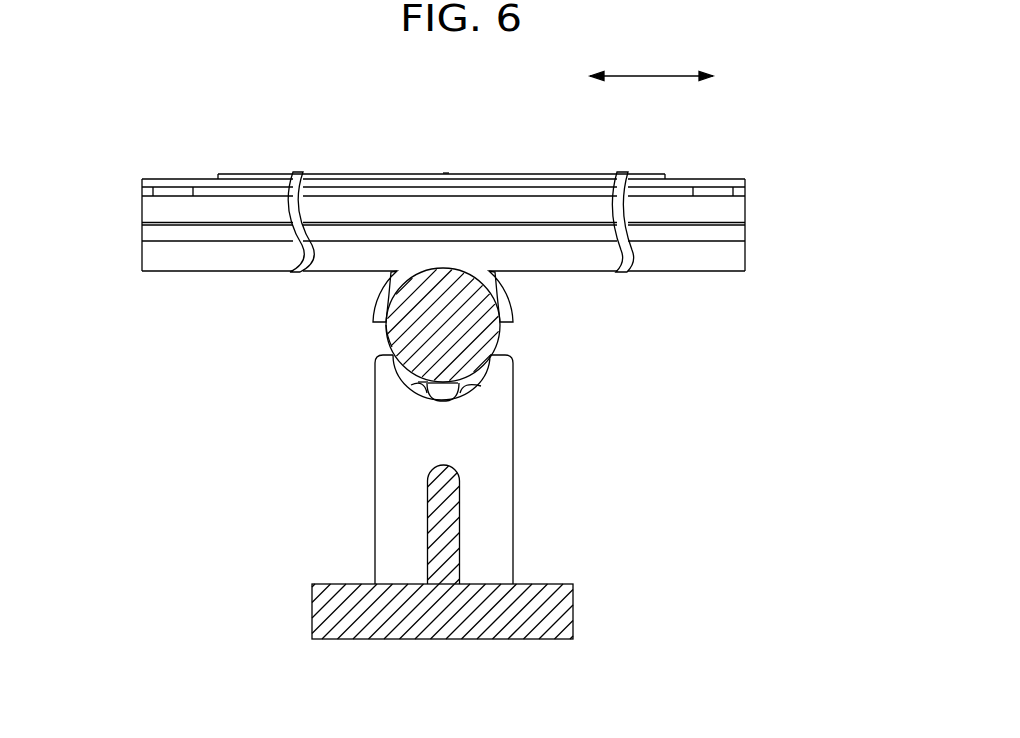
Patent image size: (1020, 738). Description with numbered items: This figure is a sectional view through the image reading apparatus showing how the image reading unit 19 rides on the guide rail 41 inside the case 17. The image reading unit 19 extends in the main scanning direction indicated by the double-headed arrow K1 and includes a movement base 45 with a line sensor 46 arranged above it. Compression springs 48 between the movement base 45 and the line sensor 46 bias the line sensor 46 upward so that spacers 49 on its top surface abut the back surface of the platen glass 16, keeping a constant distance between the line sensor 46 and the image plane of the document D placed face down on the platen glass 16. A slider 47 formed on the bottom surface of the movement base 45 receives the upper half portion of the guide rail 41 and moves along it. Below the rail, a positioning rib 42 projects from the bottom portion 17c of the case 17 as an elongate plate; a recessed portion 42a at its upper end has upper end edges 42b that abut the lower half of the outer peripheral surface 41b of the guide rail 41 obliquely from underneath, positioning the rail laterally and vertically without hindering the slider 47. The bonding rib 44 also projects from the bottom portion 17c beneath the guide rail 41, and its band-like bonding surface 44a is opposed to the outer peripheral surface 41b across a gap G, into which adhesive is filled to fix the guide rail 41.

The platen glass 16 is at (205, 176).
The case 17 is at (398, 642).
The bottom portion 17c is at (340, 584).
The image reading unit 19 is at (752, 195).
The guide rail 41 is at (455, 266).
The outer peripheral surface 41b is at (385, 334).
The positioning rib 42 is at (518, 502).
The recessed portion 42a is at (484, 384).
The upper end edge 42b is at (379, 353).
The bonding rib 44 is at (432, 401).
The bonding surface 44a is at (441, 382).
The movement base 45 is at (718, 256).
The line sensor 46 is at (745, 208).
The slider 47 is at (506, 296).
The compression spring 48 is at (160, 238).
The spacer 49 is at (168, 192).
The document D is at (449, 173).
The gap G is at (425, 382).
The double-headed arrow K1 is at (651, 64).